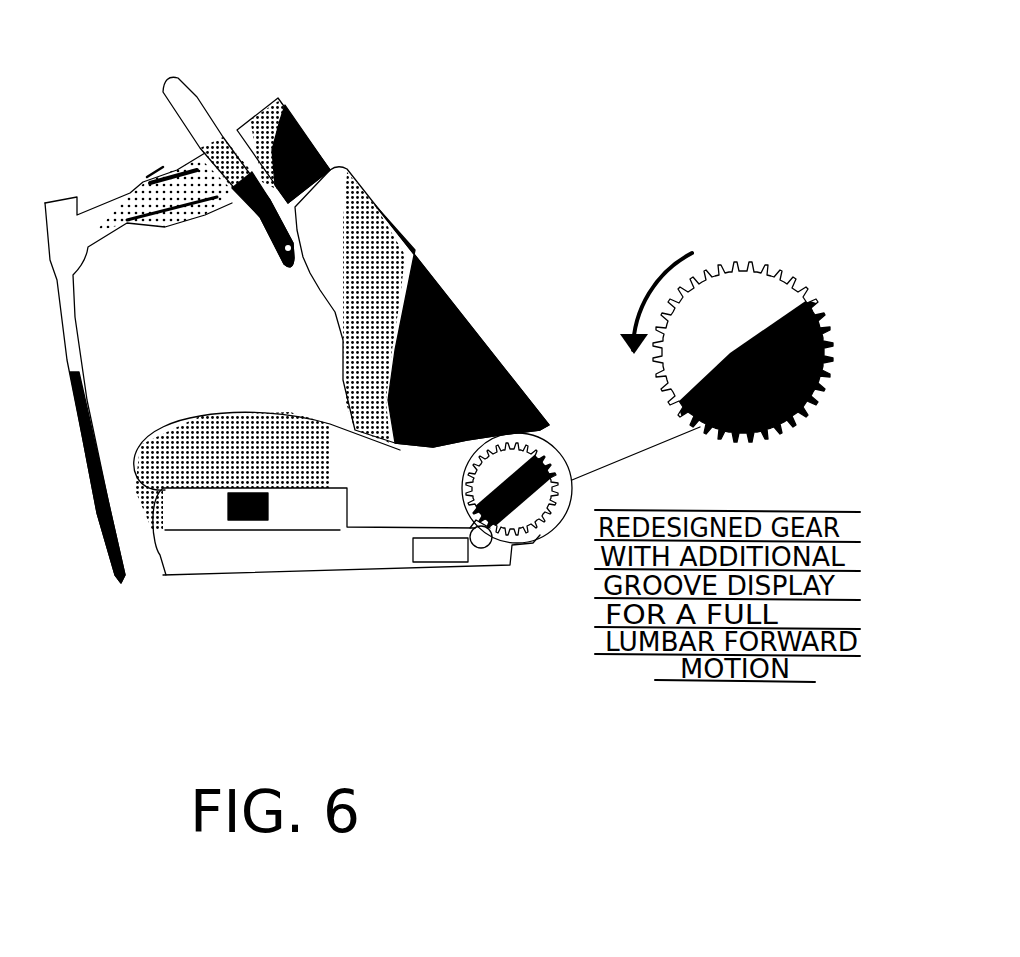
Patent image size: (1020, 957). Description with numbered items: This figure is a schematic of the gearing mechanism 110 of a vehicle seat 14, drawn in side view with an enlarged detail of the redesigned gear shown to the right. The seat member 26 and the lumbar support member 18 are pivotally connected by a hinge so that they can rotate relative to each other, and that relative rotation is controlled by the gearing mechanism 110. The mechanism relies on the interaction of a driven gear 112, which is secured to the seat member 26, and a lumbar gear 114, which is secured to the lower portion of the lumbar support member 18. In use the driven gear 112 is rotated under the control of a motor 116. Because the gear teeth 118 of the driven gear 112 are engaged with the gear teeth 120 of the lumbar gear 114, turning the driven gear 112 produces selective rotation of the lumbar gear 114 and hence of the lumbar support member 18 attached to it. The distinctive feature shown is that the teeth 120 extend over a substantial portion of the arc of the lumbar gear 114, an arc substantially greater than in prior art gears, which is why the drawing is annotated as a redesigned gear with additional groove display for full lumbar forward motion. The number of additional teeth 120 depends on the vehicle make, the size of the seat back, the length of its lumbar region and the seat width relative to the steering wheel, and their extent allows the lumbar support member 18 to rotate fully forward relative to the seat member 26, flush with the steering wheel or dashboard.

The vehicle seat 14 is at (494, 207).
The lumbar support member 18 is at (372, 203).
The seat member 26 is at (205, 417).
The gearing mechanism 110 is at (507, 580).
The driven gear 112 is at (488, 546).
The lumbar gear 114 is at (543, 452).
The motor 116 is at (425, 565).
The gear teeth of the driven gear 118 is at (472, 527).
The gear teeth of the lumbar gear 120 is at (537, 532).